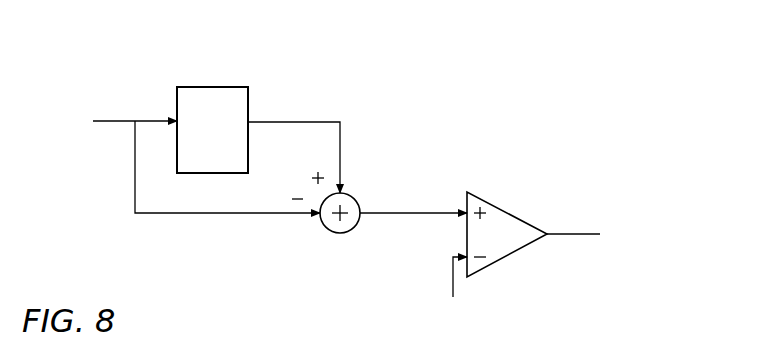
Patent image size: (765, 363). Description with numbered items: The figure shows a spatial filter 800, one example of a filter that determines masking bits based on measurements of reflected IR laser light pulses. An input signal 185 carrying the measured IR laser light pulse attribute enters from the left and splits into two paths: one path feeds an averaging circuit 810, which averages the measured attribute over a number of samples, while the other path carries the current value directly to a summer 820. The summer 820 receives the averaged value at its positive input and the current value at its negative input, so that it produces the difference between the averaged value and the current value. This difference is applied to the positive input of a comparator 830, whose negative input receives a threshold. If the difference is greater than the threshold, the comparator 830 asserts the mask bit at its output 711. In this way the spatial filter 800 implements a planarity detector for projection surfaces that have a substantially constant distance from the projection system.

The spatial filter 800 is at (617, 112).
The input signal 185 is at (108, 118).
The averaging circuit 810 is at (206, 86).
The summer 820 is at (340, 233).
The comparator 830 is at (510, 209).
The mask bit 711 is at (579, 232).